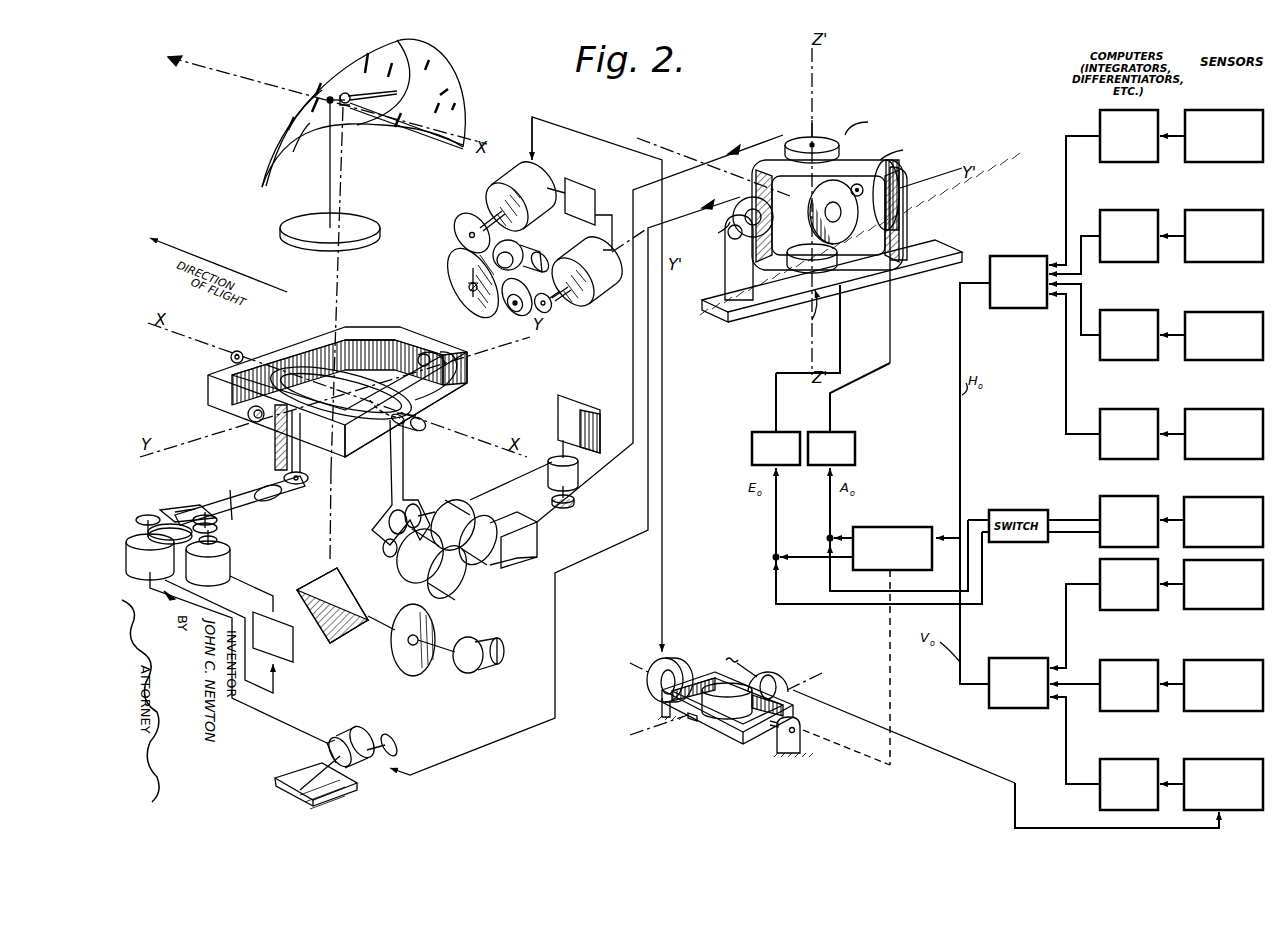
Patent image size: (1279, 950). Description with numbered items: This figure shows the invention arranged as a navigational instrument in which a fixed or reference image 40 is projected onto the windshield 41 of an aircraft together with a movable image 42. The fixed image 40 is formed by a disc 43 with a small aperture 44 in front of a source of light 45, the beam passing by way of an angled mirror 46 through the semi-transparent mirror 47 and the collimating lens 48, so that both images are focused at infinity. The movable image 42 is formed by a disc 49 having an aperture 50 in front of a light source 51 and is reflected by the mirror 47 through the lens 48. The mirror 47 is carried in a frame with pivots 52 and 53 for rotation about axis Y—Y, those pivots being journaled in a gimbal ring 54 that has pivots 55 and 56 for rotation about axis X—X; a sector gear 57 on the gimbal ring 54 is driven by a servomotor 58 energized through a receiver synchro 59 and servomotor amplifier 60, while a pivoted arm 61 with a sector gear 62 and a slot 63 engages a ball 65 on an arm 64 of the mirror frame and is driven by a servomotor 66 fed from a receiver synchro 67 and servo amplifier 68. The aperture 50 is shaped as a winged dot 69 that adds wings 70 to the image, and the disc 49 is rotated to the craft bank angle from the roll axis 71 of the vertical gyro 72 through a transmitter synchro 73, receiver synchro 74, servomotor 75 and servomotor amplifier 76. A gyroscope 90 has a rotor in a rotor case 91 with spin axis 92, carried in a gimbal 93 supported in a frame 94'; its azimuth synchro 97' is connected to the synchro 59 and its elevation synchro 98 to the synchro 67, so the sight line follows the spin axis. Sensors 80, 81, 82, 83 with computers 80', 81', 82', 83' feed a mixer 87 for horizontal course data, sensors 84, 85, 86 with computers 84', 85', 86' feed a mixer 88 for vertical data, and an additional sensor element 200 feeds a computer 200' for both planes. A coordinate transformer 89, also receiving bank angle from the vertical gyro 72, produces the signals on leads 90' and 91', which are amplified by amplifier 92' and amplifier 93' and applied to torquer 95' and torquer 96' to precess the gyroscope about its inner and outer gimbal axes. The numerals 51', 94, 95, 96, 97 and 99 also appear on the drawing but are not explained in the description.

The fixed or reference image 40 is at (328, 96).
The windshield 41 is at (298, 150).
The movable image 42 is at (342, 86).
The disc 43 is at (408, 672).
The small aperture 44 is at (420, 636).
The source of light 45 is at (476, 672).
The angled mirror 46 is at (348, 590).
The semi-transparent mirror 47 is at (300, 362).
The collimating lens 48 is at (375, 215).
The disc 49 is at (450, 292).
The aperture 50 is at (480, 275).
The light source 51 is at (528, 253).
The axis point 51' is at (205, 355).
The pivot 52 is at (262, 422).
The pivot 53 is at (458, 362).
The gimbal ring 54 is at (445, 410).
The pivot 55 is at (415, 432).
The pivot 56 is at (237, 350).
The sector gear 57 is at (408, 496).
The driving servomotor 58 is at (412, 575).
The receiver synchro 59 is at (463, 521).
The servomotor amplifier 60 is at (537, 545).
The pivoted arm 61 is at (252, 500).
The sector gear 62 is at (182, 508).
The slot 63 is at (282, 496).
The arm 64 is at (276, 466).
The ball 65 is at (308, 478).
The servomotor 66 is at (236, 556).
The receiver synchro 67 is at (142, 572).
The servo amplifier 68 is at (280, 665).
The winged dot 69 is at (470, 262).
The wings 70 is at (383, 95).
The roll axis 71 is at (612, 655).
The vertical gyro 72 is at (716, 735).
The transmitter synchro 73 is at (684, 666).
The receiver synchro 74 is at (492, 193).
The servomotor 75 is at (603, 305).
The servomotor amplifier 76 is at (592, 183).
The sensor 80 is at (1211, 148).
The compass computer 80' is at (1129, 148).
The sensor 81 is at (1211, 249).
The computer 81' is at (1129, 248).
The sensor 82 is at (1213, 348).
The computer 82' is at (1129, 347).
The sensor 83 is at (1211, 446).
The computer 83' is at (1129, 446).
The sensor 84 is at (1211, 599).
The computer 84' is at (1129, 598).
The sensor 85 is at (1211, 698).
The computer 85' is at (1129, 698).
The sensor 86 is at (1209, 771).
The pitch attitude computer 86' is at (1115, 771).
The mixer 87 is at (1032, 242).
The mixer 88 is at (1018, 658).
The coordinate transformer 89 is at (895, 527).
The gyroscope 90 is at (860, 205).
The lead 90' is at (852, 512).
The rotor case 91 is at (847, 215).
The lead 91' is at (756, 520).
The spin axis 92 is at (712, 178).
The amplifier 92' is at (852, 442).
The gimbal 93 is at (840, 143).
The amplifier 93' is at (755, 442).
The motor 94 is at (585, 477).
The frame 94' is at (722, 283).
The motor 95 is at (351, 736).
The torquer 95' is at (914, 261).
The vane 96 is at (579, 416).
The torquer 96' is at (862, 237).
The vane 97 is at (325, 785).
The azimuth synchro 97' is at (823, 115).
The elevation synchro 98 is at (576, 505).
The disc 99 is at (394, 742).
The additional sensor element 200 is at (1211, 511).
The computer 200' is at (1112, 510).